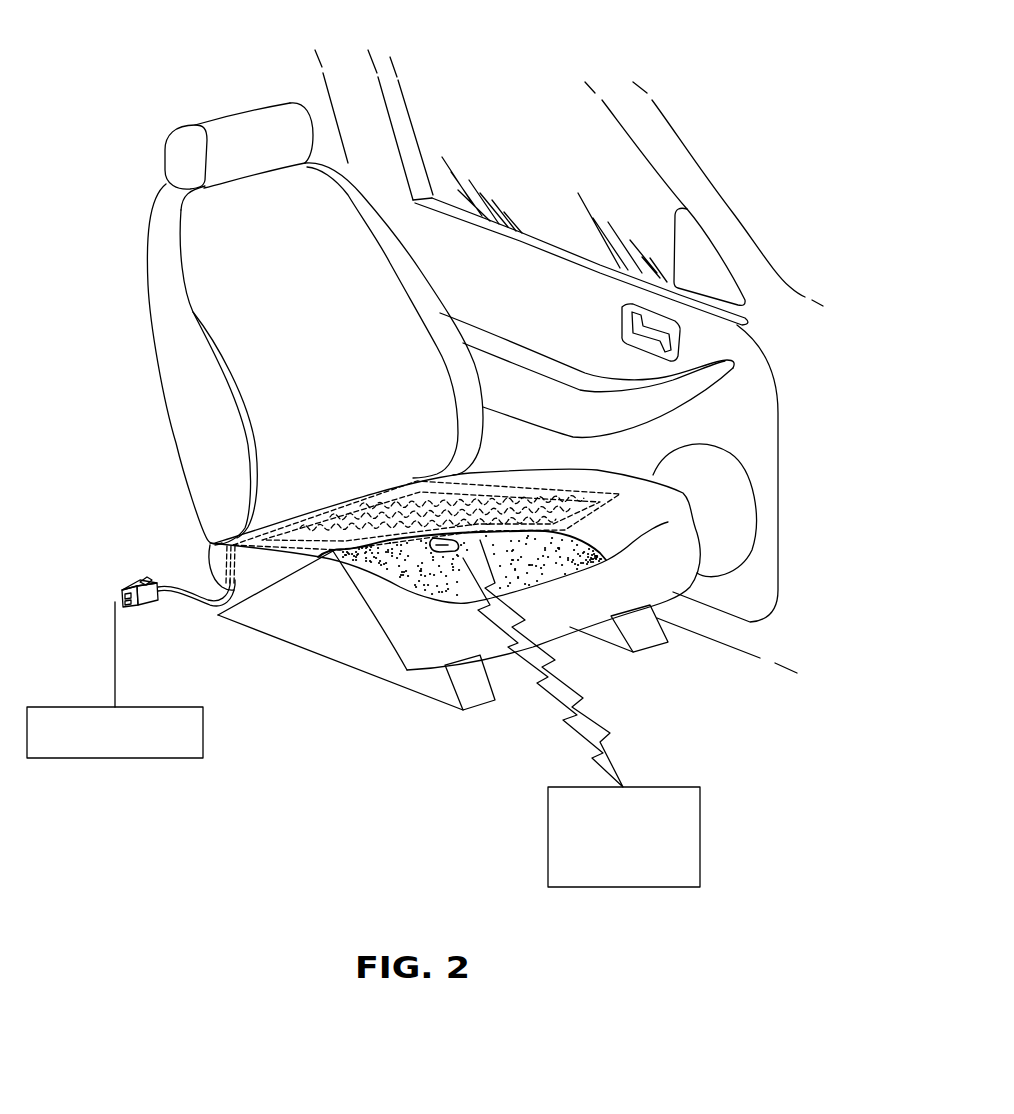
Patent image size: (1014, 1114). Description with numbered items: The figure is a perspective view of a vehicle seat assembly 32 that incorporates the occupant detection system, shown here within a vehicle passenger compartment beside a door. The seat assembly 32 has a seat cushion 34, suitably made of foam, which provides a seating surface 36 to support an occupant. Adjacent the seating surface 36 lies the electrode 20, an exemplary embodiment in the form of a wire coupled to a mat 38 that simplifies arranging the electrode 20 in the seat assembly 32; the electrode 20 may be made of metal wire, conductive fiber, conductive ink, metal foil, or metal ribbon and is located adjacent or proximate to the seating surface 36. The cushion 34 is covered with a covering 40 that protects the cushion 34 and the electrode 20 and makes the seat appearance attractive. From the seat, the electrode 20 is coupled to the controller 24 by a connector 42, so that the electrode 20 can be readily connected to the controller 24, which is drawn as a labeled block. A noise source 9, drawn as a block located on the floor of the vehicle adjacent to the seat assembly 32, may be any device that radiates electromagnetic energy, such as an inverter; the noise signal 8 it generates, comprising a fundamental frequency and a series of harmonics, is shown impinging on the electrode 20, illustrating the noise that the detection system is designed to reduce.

The vehicle seat assembly 32 is at (159, 130).
The electrode 20 is at (438, 535).
The mat 38 is at (440, 532).
The seating surface 36 is at (573, 550).
The seat cushion 34 is at (630, 498).
The connector 42 is at (135, 580).
The controller 24 is at (55, 706).
The covering 40 is at (333, 551).
The noise signal 8 is at (590, 710).
The noise source 9 is at (548, 853).